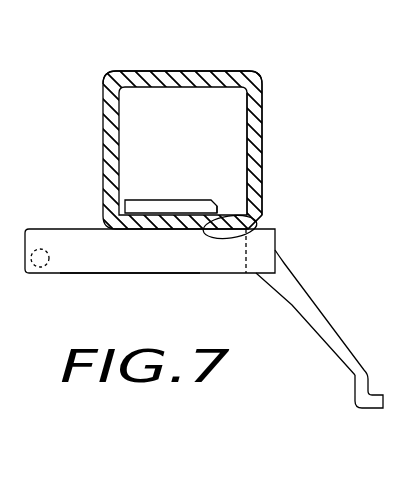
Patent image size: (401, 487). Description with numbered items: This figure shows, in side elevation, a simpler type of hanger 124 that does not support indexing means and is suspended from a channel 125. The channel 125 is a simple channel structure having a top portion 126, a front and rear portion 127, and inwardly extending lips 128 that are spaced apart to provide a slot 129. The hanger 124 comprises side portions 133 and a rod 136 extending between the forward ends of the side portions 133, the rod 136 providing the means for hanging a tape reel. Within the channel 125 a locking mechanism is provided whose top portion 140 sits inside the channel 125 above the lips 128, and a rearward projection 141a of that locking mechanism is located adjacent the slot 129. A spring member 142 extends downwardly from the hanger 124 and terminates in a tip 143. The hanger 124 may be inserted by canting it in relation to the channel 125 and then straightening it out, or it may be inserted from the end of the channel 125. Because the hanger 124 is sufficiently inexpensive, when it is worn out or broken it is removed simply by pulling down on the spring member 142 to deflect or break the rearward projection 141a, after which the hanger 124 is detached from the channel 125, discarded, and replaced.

The hanger 124 is at (168, 284).
The channel 125 is at (290, 100).
The top portion 126 is at (200, 71).
The front and rear portion 127 is at (263, 153).
The inwardly extending lips 128 is at (262, 197).
The slot 129 is at (257, 227).
The side portions 133 is at (147, 253).
The rod 136 is at (47, 249).
The top portion 140 is at (143, 200).
The rearward projection 141a is at (217, 213).
The spring member 142 is at (337, 330).
The tip 143 is at (365, 410).